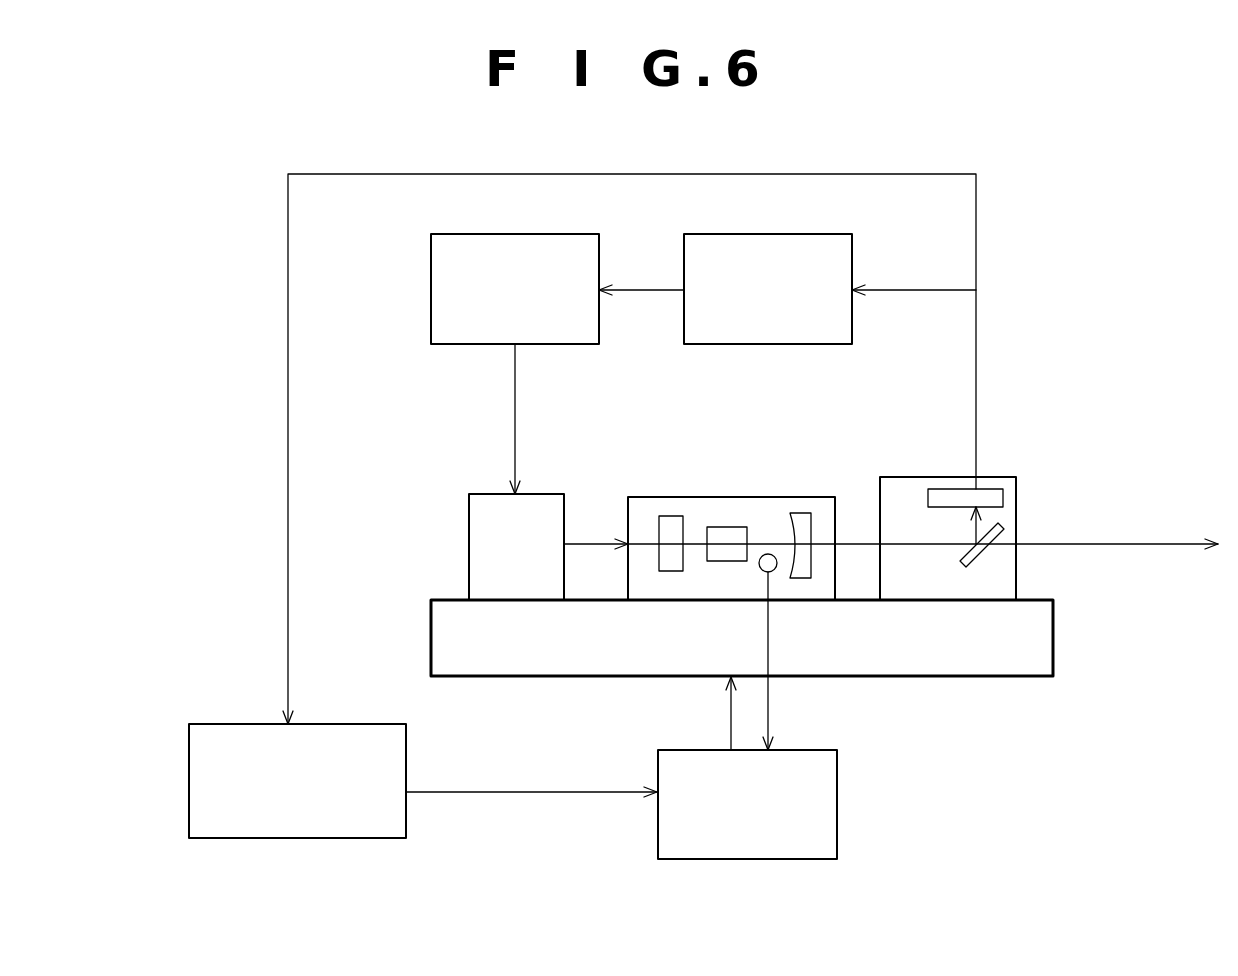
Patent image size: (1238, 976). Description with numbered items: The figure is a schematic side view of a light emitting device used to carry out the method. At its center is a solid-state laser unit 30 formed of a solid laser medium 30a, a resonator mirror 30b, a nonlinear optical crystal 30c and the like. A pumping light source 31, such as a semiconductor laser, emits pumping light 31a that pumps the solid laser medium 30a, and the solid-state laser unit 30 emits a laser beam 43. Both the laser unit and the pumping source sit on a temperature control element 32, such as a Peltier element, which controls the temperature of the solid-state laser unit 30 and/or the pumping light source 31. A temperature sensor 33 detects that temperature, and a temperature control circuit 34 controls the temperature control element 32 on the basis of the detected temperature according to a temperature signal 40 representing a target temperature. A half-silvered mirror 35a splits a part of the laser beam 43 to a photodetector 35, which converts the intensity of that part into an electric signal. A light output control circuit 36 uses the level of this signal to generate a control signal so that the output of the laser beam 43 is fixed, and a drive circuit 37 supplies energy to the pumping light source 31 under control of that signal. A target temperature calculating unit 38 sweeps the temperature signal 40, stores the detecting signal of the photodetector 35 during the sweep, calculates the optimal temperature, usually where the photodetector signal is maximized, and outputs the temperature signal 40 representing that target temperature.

The solid-state laser unit 30 is at (760, 490).
The solid laser medium 30a is at (672, 516).
The resonator mirror 30b is at (809, 513).
The nonlinear optical crystal 30c is at (723, 527).
The pumping light source 31 is at (477, 566).
The pumping light 31a is at (585, 543).
The temperature control element 32 is at (1046, 643).
The temperature sensor 33 is at (775, 570).
The temperature control circuit 34 is at (837, 810).
The photodetector 35 is at (990, 489).
The half-silvered mirror 35a is at (1005, 528).
The light output control circuit 36 is at (805, 233).
The drive circuit 37 is at (562, 233).
The target temperature calculating unit 38 is at (217, 724).
The temperature signal 40 is at (525, 792).
The laser beam 43 is at (1126, 544).